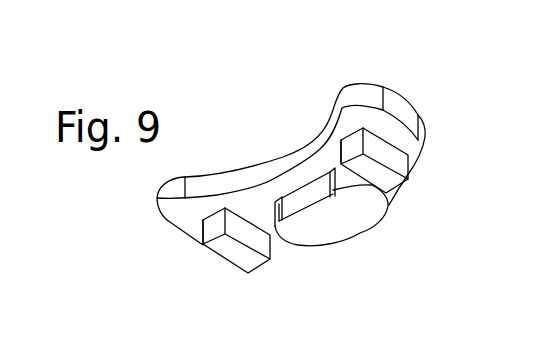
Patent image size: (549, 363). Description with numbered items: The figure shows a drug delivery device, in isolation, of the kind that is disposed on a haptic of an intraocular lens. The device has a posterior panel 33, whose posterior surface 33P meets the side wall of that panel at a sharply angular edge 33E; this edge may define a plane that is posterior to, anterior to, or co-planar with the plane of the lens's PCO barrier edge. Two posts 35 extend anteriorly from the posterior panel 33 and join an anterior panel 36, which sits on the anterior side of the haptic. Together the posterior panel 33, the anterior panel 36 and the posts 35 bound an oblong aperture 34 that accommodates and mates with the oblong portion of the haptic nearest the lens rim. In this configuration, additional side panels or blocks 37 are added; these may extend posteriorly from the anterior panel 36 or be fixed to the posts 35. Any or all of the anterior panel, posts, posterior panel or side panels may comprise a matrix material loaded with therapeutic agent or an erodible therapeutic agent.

The posterior panel 33 is at (361, 266).
The posterior surface 33P is at (306, 220).
The sharply angular edge 33E is at (275, 246).
The oblong aperture 34 is at (281, 198).
The posts 35 is at (296, 195).
The anterior panel 36 is at (358, 82).
The side panels or blocks 37 is at (233, 270).